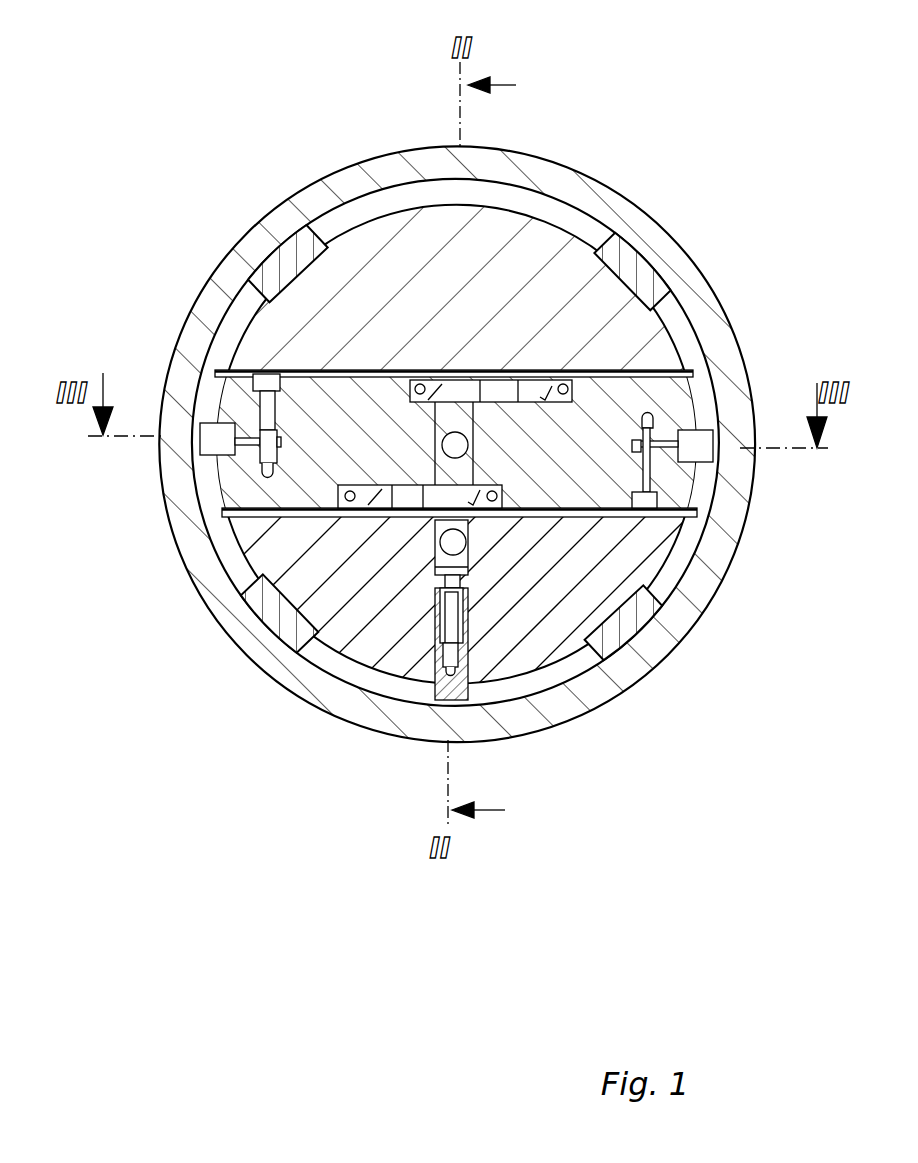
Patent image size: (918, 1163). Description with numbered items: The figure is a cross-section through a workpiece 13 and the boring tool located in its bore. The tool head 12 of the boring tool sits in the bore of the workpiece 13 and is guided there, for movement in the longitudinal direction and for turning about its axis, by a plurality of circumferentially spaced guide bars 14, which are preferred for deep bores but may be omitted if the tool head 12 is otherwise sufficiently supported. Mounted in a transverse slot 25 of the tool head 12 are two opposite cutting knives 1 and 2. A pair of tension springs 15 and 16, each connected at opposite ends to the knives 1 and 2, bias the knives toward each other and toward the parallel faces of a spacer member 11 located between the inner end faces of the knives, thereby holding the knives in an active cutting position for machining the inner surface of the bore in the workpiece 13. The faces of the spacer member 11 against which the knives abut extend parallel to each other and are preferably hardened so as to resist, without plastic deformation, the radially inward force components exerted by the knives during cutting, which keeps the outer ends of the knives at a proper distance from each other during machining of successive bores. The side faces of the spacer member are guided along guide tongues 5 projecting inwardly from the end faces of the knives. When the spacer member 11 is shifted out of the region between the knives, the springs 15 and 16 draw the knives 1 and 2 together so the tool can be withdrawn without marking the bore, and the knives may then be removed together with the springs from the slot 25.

The cutting knife 1 is at (612, 435).
The cutting knife 2 is at (313, 425).
The guide tongue 5 is at (464, 393).
The spacer member 11 is at (457, 423).
The tool head 12 is at (547, 593).
The workpiece 13 is at (683, 592).
The guide bar 14 is at (625, 271).
The tension spring 15 is at (440, 385).
The tension spring 16 is at (355, 493).
The transverse slot 25 is at (262, 506).